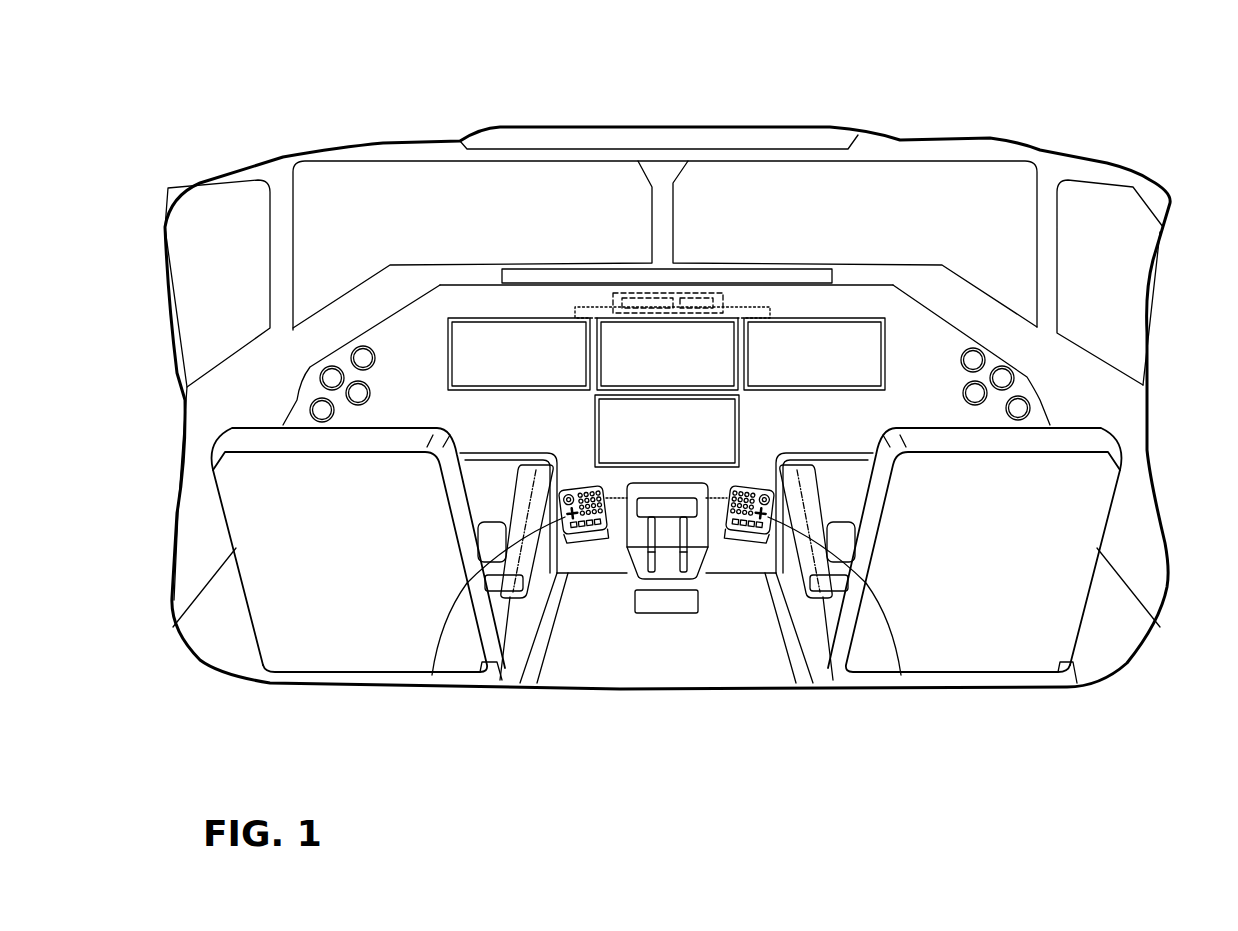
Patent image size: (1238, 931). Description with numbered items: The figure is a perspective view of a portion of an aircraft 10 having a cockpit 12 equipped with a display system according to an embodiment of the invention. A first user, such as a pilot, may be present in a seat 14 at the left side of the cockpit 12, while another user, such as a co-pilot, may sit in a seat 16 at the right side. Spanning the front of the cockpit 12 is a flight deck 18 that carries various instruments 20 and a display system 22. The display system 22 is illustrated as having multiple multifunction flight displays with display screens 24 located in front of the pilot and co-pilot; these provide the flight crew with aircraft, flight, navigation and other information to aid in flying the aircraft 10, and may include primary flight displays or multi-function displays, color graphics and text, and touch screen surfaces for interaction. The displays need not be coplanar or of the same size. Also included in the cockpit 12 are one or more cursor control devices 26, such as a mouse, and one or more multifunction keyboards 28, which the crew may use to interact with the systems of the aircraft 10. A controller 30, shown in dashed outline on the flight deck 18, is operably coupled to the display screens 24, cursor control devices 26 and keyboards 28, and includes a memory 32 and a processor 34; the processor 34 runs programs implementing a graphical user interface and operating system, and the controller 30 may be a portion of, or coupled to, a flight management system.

The aircraft 10 is at (266, 92).
The cockpit 12 is at (407, 142).
The seat 14 is at (303, 638).
The seat 16 is at (1015, 630).
The flight deck 18 is at (323, 358).
The instruments 20 is at (310, 410).
The display system 22 is at (650, 313).
The display screens 24 is at (527, 335).
The cursor control devices 26 is at (563, 495).
The multifunction keyboards 28 is at (600, 540).
The controller 30 is at (713, 297).
The memory 32 is at (625, 293).
The processor 34 is at (700, 293).